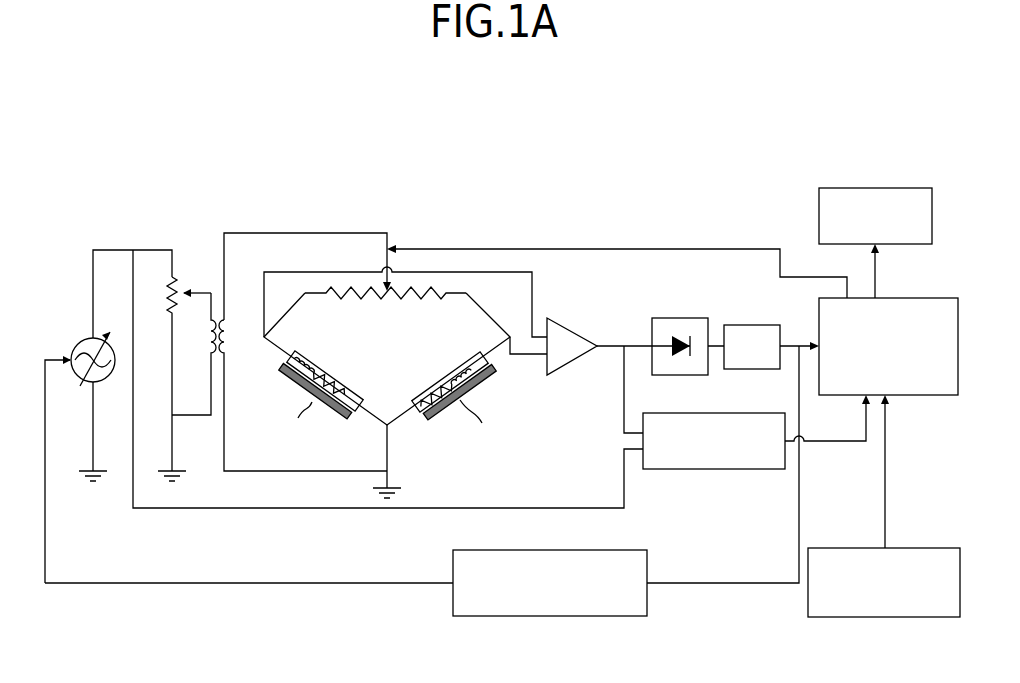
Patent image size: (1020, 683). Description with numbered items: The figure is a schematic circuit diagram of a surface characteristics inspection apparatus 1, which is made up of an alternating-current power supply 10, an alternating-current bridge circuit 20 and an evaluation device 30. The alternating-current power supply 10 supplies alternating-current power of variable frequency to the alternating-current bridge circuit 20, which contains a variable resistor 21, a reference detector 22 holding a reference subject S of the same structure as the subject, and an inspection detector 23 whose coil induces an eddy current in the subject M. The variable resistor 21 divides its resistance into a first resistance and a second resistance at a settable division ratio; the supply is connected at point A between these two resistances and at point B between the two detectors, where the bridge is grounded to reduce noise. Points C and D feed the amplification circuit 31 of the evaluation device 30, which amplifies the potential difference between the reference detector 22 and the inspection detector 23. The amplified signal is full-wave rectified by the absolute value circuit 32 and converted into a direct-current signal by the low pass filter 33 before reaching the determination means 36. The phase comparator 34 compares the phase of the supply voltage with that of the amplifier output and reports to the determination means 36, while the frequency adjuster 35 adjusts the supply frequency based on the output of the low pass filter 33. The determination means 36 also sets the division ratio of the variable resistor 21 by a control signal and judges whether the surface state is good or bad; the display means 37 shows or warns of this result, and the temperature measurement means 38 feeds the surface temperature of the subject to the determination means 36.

The surface characteristics inspection apparatus 1 is at (934, 106).
The alternating-current power supply 10 is at (237, 183).
The alternating-current bridge circuit 20 is at (522, 183).
The variable resistor 21 is at (356, 290).
The reference detector 22 is at (330, 372).
The inspection detector 23 is at (430, 380).
The evaluation device 30 is at (945, 183).
The amplification circuit 31 is at (572, 365).
The absolute value circuit 32 is at (680, 318).
The low pass filter 33 is at (750, 325).
The phase comparator 34 is at (702, 470).
The frequency adjuster 35 is at (552, 617).
The determination means 36 is at (908, 395).
The display means 37 is at (819, 213).
The temperature measurement means 38 is at (855, 548).